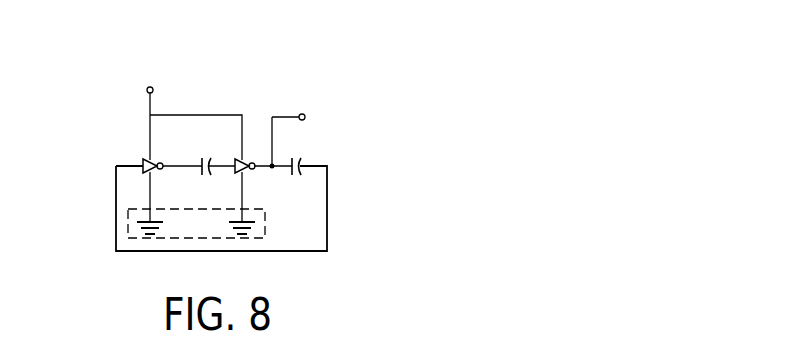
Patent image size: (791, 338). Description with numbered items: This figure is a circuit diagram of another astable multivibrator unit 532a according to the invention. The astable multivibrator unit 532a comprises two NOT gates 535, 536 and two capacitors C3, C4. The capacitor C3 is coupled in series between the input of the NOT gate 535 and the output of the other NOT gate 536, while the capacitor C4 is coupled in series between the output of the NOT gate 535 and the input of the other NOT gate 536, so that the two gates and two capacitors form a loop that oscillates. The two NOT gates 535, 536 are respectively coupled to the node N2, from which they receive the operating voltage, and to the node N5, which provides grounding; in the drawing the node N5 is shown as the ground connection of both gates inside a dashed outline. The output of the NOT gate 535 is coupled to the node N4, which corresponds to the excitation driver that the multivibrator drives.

The astable multivibrator unit 532a is at (257, 150).
The NOT gate 535 is at (245, 162).
The NOT gate 536 is at (148, 160).
The capacitor C3 is at (206, 153).
The capacitor C4 is at (298, 153).
The node N2 is at (153, 77).
The node N4 is at (304, 104).
The node N5 is at (211, 224).